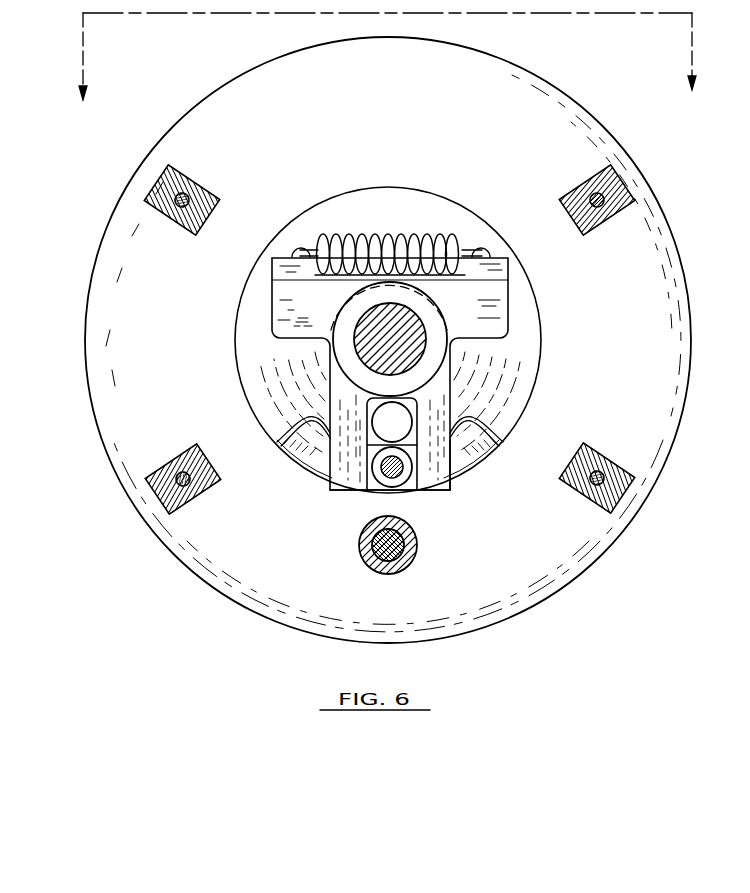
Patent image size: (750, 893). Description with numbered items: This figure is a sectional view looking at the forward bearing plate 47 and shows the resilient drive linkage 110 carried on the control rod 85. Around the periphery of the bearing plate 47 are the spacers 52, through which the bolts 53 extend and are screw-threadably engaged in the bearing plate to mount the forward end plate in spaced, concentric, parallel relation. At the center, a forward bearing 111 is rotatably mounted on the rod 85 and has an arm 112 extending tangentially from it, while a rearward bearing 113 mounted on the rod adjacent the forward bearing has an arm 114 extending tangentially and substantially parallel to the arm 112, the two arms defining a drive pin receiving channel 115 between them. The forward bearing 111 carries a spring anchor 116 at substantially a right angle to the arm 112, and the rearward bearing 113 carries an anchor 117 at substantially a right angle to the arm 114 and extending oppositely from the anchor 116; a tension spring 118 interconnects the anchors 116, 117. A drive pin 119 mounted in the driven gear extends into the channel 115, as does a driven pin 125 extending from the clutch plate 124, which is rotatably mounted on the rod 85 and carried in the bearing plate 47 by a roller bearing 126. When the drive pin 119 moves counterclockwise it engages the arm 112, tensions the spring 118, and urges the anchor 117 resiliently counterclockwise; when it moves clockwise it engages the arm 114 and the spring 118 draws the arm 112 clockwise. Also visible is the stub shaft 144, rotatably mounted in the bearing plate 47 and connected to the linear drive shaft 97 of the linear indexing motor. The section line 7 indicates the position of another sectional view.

The section line 7- 7 is at (387, 69).
The forward bearing plate 47 is at (404, 120).
The clutch plate 124 is at (421, 190).
The spacers 52 is at (600, 240).
The bolts 53 is at (588, 183).
The anchor 117 is at (488, 303).
The tension spring 118 is at (373, 238).
The spring anchor 116 is at (283, 310).
The rearward bearing 113 is at (338, 306).
The forward bearing 111 is at (428, 309).
The control rod 85 is at (375, 343).
The resilient drive linkage 110 is at (468, 354).
The drive pin receiving channel 115 is at (414, 490).
The driven pin 125 is at (405, 433).
The drive pin 119 is at (391, 487).
The arm 114 is at (340, 446).
The roller bearing 126 is at (471, 447).
The arm 112 is at (445, 481).
The linear drive shaft 97 is at (413, 531).
The stub shaft 144 is at (362, 537).